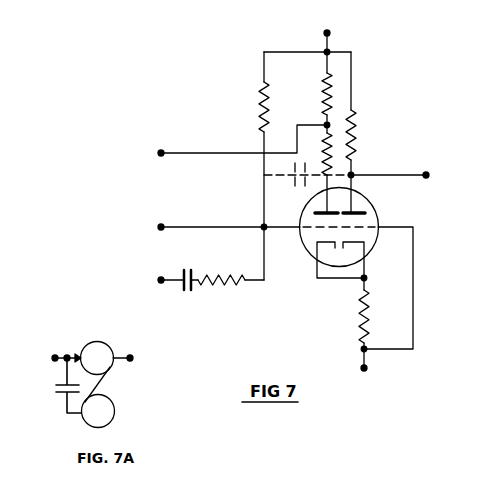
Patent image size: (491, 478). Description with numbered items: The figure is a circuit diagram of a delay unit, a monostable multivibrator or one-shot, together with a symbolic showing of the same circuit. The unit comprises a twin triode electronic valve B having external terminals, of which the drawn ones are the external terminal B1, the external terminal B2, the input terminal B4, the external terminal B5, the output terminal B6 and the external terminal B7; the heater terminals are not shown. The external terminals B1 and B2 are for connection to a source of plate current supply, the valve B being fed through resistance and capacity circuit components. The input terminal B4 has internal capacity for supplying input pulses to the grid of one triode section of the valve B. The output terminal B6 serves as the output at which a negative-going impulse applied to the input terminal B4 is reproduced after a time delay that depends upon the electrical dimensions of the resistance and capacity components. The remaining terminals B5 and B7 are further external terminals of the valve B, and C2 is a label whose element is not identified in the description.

In FIG. 7, the twin triode electronic valve B is at (373, 213).
In FIG. 7, the external terminal B1 is at (364, 368).
In FIG. 7, the external terminal B2 is at (327, 31).
In FIG. 7, the input terminal B4 is at (161, 279).
In FIG. 7A, the input terminal B4 is at (55, 357).
In FIG. 7, the external terminal B5 is at (161, 226).
In FIG. 7, the output terminal B6 is at (161, 152).
In FIG. 7A, the output terminal B6 is at (130, 357).
In FIG. 7, the external terminal B7 is at (426, 173).
In FIG. 7, the capacitor C2 is at (312, 477).